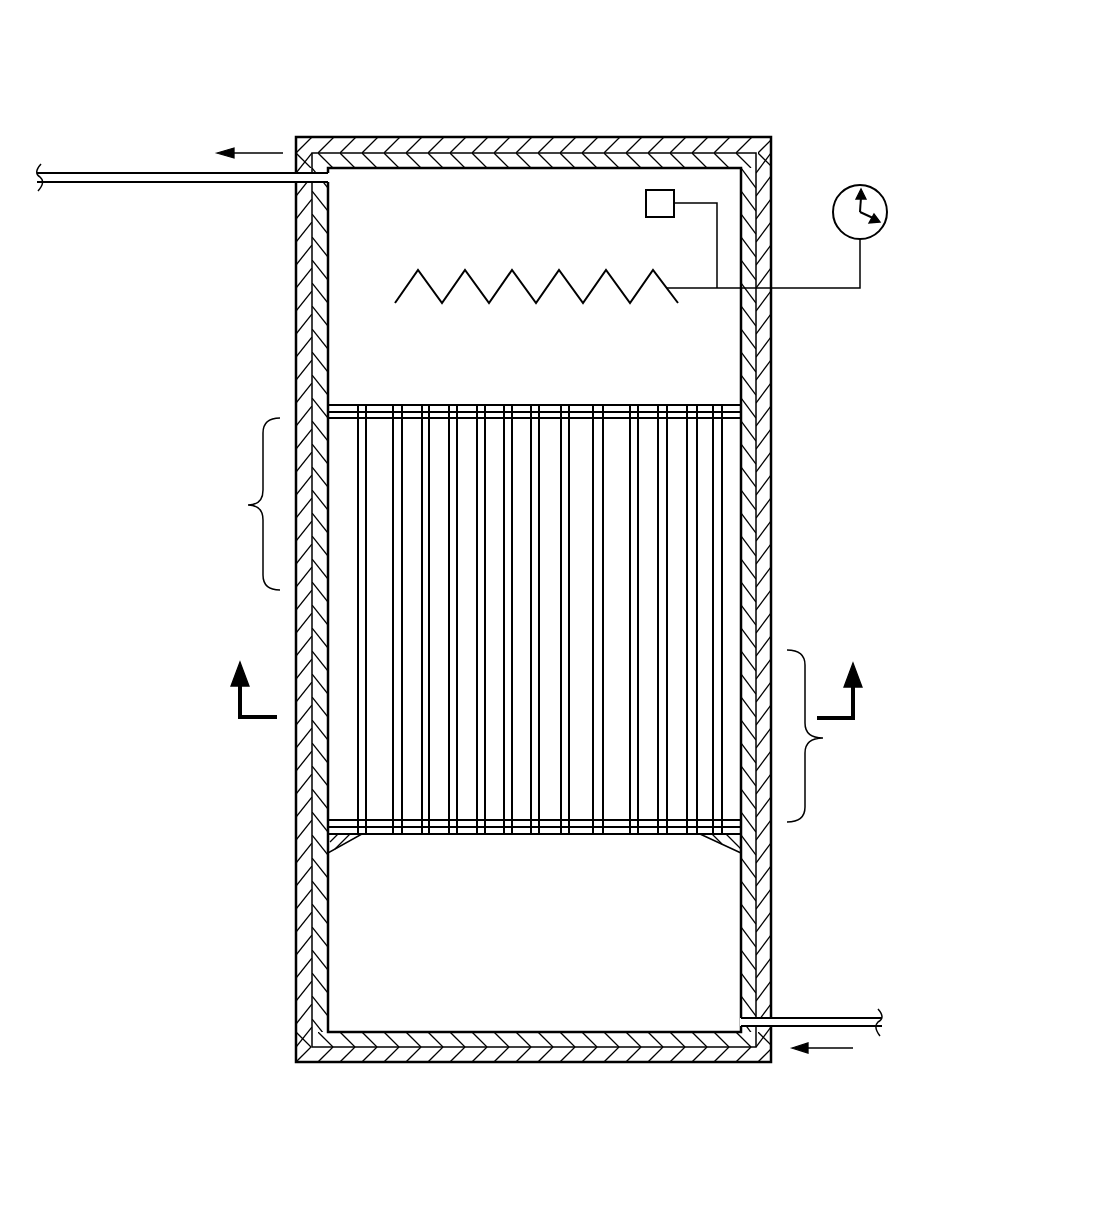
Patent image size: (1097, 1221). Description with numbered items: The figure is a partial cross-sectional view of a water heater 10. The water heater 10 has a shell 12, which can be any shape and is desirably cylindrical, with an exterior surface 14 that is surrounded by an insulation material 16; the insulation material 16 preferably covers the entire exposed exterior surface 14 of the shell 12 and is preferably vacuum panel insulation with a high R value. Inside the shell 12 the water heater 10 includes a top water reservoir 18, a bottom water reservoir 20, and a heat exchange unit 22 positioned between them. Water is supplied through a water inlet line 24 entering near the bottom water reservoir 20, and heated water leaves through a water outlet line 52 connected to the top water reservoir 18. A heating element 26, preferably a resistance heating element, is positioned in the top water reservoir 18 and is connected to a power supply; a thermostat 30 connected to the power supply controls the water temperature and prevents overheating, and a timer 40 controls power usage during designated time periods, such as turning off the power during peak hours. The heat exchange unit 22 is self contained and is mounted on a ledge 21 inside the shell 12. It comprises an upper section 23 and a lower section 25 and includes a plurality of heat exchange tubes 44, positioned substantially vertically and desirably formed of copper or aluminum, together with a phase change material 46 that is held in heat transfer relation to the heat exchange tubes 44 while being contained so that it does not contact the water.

The water heater 10 is at (756, 99).
The shell 12 is at (757, 183).
The exterior surface 14 is at (759, 232).
The insulation material 16 is at (773, 346).
The top water reservoir 18 is at (431, 197).
The bottom water reservoir 20 is at (408, 995).
The ledge 21 is at (343, 838).
The heat exchange unit 22 is at (237, 452).
The upper section 23 is at (240, 504).
The water inlet line 24 is at (812, 1016).
The lower section 25 is at (827, 736).
The heating element 26 is at (470, 288).
The thermostat 30 is at (645, 203).
The timer 40 is at (870, 186).
The heat exchange tubes 44 is at (718, 512).
The phase change material 46 is at (560, 420).
The water outlet line 52 is at (184, 173).